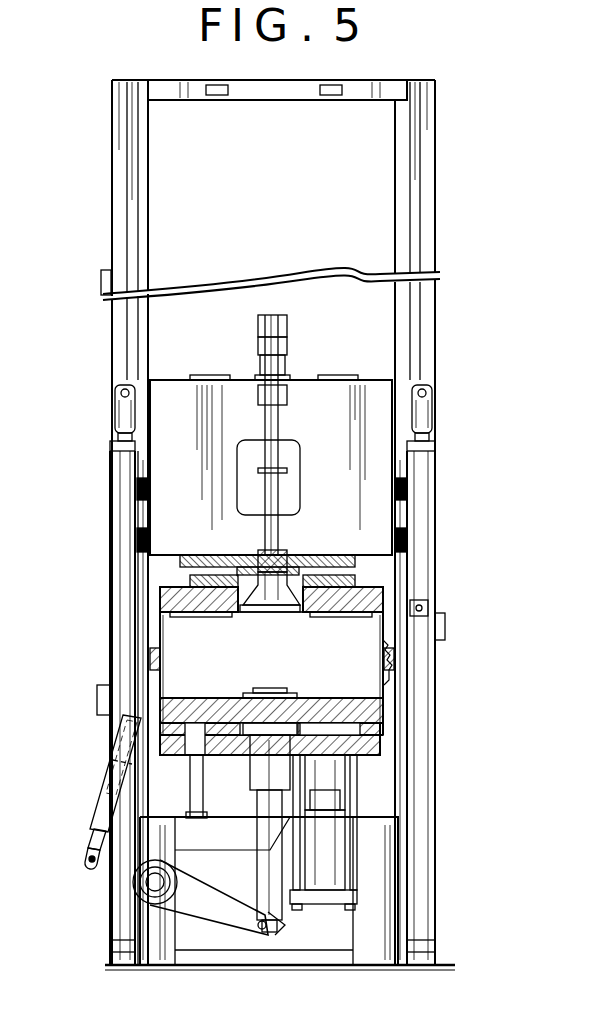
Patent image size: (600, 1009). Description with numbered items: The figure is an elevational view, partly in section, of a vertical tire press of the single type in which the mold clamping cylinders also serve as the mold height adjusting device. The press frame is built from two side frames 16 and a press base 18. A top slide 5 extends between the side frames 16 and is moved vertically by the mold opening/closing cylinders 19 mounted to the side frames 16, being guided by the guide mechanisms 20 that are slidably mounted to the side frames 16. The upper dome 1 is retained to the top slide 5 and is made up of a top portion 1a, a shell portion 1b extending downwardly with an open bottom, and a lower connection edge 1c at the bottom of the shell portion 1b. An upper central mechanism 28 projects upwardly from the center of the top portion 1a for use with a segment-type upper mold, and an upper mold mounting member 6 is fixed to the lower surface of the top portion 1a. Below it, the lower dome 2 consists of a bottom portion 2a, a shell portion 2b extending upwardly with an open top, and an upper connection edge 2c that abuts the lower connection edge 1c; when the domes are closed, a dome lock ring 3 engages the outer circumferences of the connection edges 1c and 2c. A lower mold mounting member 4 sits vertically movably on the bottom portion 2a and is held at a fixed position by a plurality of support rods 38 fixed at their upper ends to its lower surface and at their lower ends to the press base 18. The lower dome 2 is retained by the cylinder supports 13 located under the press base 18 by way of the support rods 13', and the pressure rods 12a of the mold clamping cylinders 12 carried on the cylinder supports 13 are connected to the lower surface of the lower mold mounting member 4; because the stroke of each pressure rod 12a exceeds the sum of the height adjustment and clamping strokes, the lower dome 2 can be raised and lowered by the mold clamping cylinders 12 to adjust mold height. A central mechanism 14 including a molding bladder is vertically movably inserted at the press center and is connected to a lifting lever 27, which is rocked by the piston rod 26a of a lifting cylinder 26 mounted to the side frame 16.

The upper dome 1 is at (393, 606).
The top portion 1a is at (362, 594).
The shell portion 1b is at (150, 617).
The lower connection edge 1c is at (162, 652).
The lower dome 2 is at (385, 732).
The bottom portion 2a is at (238, 756).
The shell portion 2b is at (163, 686).
The upper connection edge 2c is at (163, 660).
The dome lock ring 3 is at (395, 654).
The lower mold mounting member 4 is at (330, 708).
The top slide 5 is at (318, 383).
The upper mold mounting member 6 is at (248, 614).
The mold clamping cylinder 12 is at (325, 870).
The pressure rod 12a is at (340, 797).
The cylinder support 13 is at (323, 918).
The support rod 13' is at (341, 851).
The central mechanism 14 is at (265, 868).
The side frame 16 is at (117, 248).
The press base 18 is at (398, 817).
The mold opening/closing cylinder 19 is at (120, 552).
The guide mechanism 20 is at (136, 496).
The lifting cylinder 26 is at (106, 798).
The piston rod 26a is at (94, 840).
The lifting lever 27 is at (224, 925).
The upper central mechanism 28 is at (280, 555).
The support rod 38 is at (190, 780).